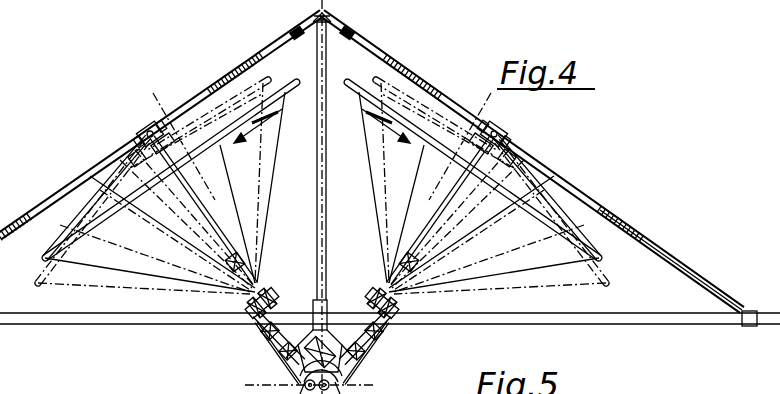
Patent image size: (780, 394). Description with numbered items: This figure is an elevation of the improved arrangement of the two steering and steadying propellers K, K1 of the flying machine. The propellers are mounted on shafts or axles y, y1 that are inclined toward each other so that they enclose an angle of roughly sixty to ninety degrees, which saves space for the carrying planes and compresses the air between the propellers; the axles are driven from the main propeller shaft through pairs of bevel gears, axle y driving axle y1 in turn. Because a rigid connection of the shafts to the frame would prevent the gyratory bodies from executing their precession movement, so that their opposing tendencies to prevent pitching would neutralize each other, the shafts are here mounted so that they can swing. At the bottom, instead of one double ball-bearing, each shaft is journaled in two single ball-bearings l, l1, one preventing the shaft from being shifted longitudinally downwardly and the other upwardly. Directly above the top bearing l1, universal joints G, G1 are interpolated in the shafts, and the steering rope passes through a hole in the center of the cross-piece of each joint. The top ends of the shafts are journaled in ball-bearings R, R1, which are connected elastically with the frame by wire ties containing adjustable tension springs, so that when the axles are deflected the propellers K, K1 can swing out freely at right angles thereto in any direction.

The ball-bearing R is at (502, 136).
The ball-bearing R1 is at (145, 132).
The steering and steadying propeller K is at (600, 259).
The steering and steadying propeller K1 is at (153, 183).
The universal joint G is at (370, 308).
The universal joint G1 is at (273, 309).
The single ball-bearing l is at (376, 380).
The single ball-bearing l1 is at (397, 330).
The axle y is at (452, 184).
The axle y1 is at (192, 183).